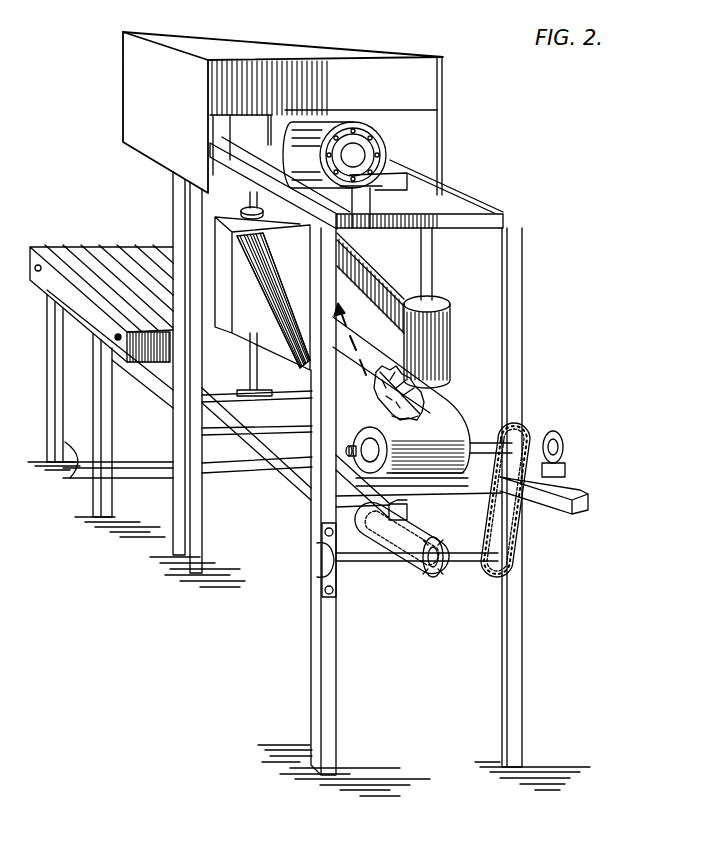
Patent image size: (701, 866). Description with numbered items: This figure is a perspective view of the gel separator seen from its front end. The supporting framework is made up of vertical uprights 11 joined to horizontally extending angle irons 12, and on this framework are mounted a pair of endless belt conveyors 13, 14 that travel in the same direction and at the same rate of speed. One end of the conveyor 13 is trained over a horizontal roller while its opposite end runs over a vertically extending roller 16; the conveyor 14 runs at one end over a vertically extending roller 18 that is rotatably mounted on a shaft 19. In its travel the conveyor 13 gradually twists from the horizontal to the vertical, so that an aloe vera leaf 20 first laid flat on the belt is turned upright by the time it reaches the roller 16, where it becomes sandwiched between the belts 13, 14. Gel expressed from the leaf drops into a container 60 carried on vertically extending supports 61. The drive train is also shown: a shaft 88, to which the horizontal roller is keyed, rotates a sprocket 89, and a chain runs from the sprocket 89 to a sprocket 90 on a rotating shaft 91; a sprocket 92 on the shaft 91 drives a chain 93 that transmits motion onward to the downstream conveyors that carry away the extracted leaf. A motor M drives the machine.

The vertical uprights 11 is at (200, 508).
The horizontally extending angle irons 12 is at (483, 204).
The endless belt conveyor 13 is at (446, 402).
The endless belt conveyor 14 is at (393, 260).
The vertically extending roller 16 is at (265, 262).
The vertically extending roller 18 is at (447, 300).
The shaft 19 is at (432, 260).
The aloe vera leaf 20 is at (408, 418).
The container 60 is at (88, 243).
The vertically extending supports 61 is at (100, 478).
The shaft 88 is at (483, 444).
The sprocket 89 is at (525, 428).
The sprocket 90 is at (517, 567).
The rotating shaft 91 is at (472, 562).
The sprocket 92 is at (426, 575).
The chain 93 is at (377, 540).
The motor M is at (380, 129).